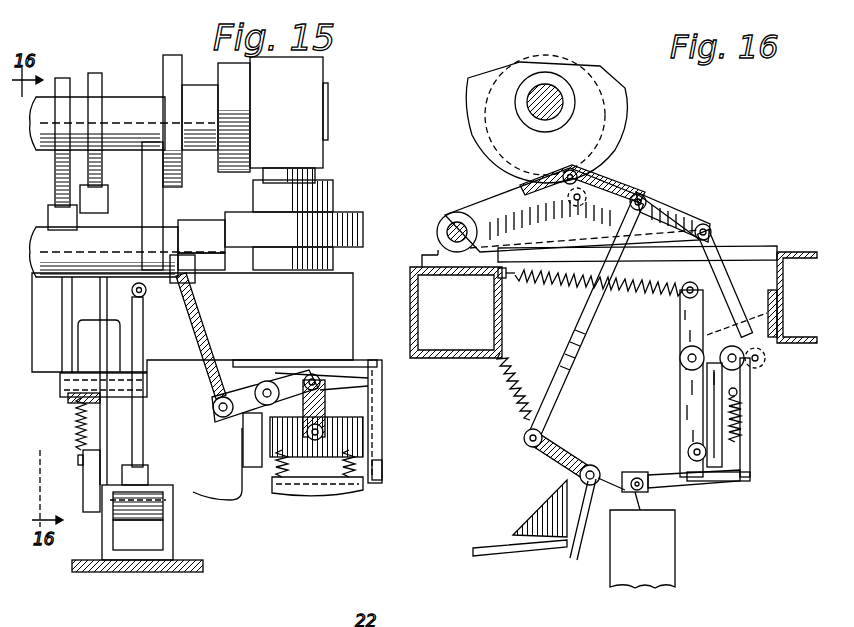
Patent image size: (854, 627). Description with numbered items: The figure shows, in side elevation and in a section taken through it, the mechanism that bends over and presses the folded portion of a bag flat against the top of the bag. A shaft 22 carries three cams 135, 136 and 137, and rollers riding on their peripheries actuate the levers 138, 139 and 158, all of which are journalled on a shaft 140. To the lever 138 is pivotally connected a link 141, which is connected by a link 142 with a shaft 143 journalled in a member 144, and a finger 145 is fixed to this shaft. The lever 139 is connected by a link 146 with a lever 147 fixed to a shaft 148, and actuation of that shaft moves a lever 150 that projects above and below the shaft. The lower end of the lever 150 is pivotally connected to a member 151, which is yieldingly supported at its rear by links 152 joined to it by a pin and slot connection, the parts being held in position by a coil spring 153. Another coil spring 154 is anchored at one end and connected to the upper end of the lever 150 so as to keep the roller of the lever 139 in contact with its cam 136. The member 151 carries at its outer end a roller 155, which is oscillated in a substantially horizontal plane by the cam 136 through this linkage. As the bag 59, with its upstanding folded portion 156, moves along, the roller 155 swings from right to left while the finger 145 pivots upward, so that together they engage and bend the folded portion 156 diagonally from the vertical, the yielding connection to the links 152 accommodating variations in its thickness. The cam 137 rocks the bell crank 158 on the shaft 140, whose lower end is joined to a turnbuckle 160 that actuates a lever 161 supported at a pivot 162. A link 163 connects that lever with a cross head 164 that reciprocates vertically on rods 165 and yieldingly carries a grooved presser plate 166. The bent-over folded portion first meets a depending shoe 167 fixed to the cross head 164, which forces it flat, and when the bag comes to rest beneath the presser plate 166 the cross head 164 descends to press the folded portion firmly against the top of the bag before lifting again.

In FIG. 15, the shaft 22 is at (120, 142).
In FIG. 16, the shaft 22 is at (551, 88).
In FIG. 16, the bag 59 is at (675, 566).
In FIG. 15, the cam 135 is at (61, 78).
In FIG. 16, the cam 135 is at (468, 136).
In FIG. 15, the cam 136 is at (93, 73).
In FIG. 16, the cam 136 is at (605, 128).
In FIG. 15, the cam 137 is at (163, 72).
In FIG. 16, the lever 138 is at (503, 210).
In FIG. 16, the lever 139 is at (670, 222).
In FIG. 15, the shaft 140 is at (32, 230).
In FIG. 16, the shaft 140 is at (437, 230).
In FIG. 15, the link 141 is at (100, 430).
In FIG. 16, the link 141 is at (592, 315).
In FIG. 15, the link 142 is at (88, 480).
In FIG. 16, the link 142 is at (552, 455).
In FIG. 16, the shaft 143 is at (592, 466).
In FIG. 15, the member 144 is at (173, 535).
In FIG. 16, the member 144 is at (548, 512).
In FIG. 16, the finger 145 is at (575, 556).
In FIG. 16, the link 146 is at (733, 282).
In FIG. 15, the lever 147 is at (85, 398).
In FIG. 16, the lever 147 is at (712, 372).
In FIG. 15, the shaft 148 is at (147, 385).
In FIG. 16, the shaft 148 is at (683, 360).
In FIG. 15, the lever 150 is at (140, 415).
In FIG. 16, the lever 150 is at (690, 388).
In FIG. 16, the member 151 is at (720, 479).
In FIG. 16, the links 152 is at (740, 380).
In FIG. 16, the coil spring 153 is at (745, 420).
In FIG. 16, the coil spring 154 is at (558, 280).
In FIG. 16, the roller 155 is at (645, 495).
In FIG. 16, the folded portion 156 is at (630, 478).
In FIG. 15, the bell crank 158 is at (167, 198).
In FIG. 15, the turnbuckle 160 is at (210, 335).
In FIG. 15, the lever 161 is at (290, 380).
In FIG. 15, the pivot 162 is at (265, 393).
In FIG. 15, the link 163 is at (370, 385).
In FIG. 15, the cross head 164 is at (330, 435).
In FIG. 15, the vertical rods 165 is at (382, 467).
In FIG. 15, the presser plate 166 is at (335, 490).
In FIG. 15, the shoe 167 is at (240, 503).